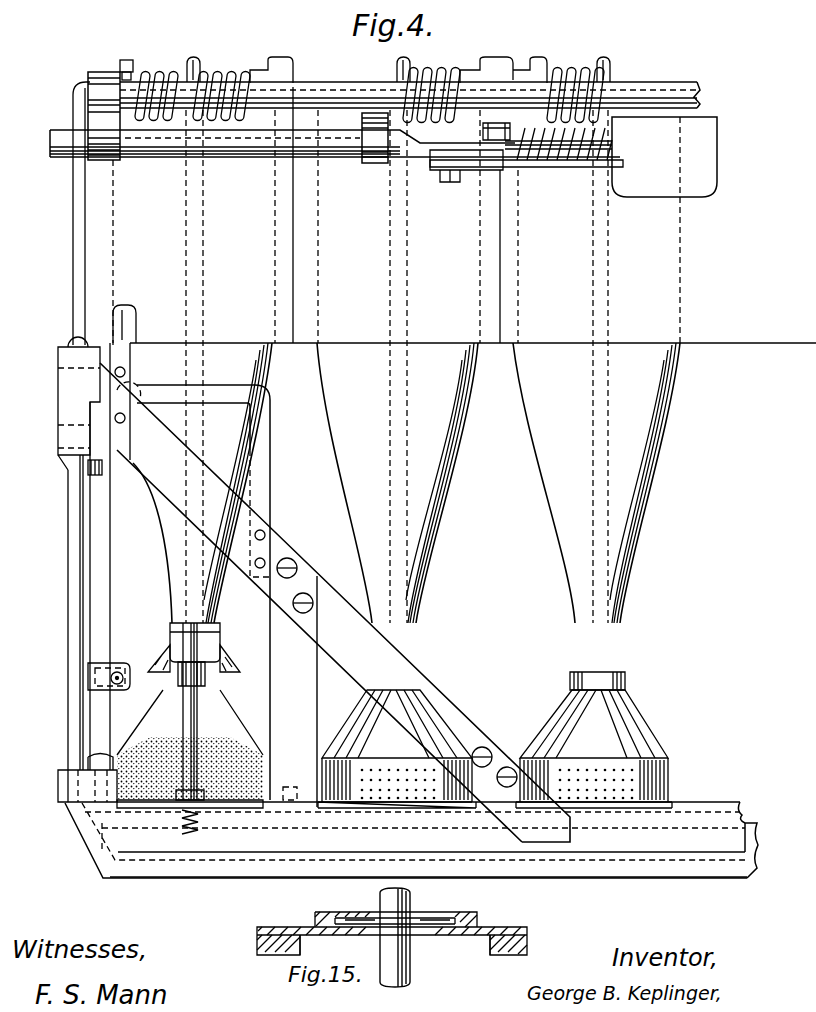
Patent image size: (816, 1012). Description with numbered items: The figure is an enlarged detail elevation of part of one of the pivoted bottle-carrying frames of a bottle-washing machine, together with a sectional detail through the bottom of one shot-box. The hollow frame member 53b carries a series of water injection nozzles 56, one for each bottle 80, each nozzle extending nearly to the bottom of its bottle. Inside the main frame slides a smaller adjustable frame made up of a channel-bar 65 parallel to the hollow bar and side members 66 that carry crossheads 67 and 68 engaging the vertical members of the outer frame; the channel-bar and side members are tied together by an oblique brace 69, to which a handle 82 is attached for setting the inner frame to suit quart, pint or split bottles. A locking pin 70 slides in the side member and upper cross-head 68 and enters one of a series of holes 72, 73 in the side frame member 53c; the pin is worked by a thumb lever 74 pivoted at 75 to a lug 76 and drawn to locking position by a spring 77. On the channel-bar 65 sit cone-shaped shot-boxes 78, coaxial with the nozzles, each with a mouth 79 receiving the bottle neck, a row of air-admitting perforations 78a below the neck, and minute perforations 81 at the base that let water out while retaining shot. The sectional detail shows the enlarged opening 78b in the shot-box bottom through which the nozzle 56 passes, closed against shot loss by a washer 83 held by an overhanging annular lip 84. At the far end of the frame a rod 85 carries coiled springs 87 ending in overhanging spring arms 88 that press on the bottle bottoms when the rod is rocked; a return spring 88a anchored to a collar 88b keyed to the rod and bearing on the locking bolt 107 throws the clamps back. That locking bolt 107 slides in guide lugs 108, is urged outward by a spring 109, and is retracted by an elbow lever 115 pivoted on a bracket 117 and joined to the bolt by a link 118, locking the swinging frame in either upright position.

In FIG. 4, the hollow frame member 53b is at (338, 866).
In FIG. 4, the side frame member 53c is at (74, 614).
In FIG. 4, the water injection nozzle 56 is at (182, 706).
In FIG. 15, the water injection nozzle 56 is at (412, 965).
In FIG. 4, the channel-bar 65 is at (278, 848).
In FIG. 4, the side member 66 is at (80, 566).
In FIG. 4, the crosshead 67 is at (62, 782).
In FIG. 4, the upper cross-head 68 is at (58, 375).
In FIG. 4, the oblique brace 69 is at (240, 518).
In FIG. 4, the locking pin 70 is at (72, 358).
In FIG. 4, the hole 72 is at (76, 285).
In FIG. 4, the hole 73 is at (74, 203).
In FIG. 4, the thumb lever 74 is at (132, 348).
In FIG. 4, the pivot 75 is at (120, 672).
In FIG. 4, the lug 76 is at (100, 690).
In FIG. 4, the spring 77 is at (88, 470).
In FIG. 4, the shot-box 78 is at (222, 712).
In FIG. 15, the shot-box 78 is at (508, 926).
In FIG. 4, the perforations 78a is at (208, 680).
In FIG. 15, the opening 78b is at (395, 945).
In FIG. 4, the mouth 79 is at (222, 658).
In FIG. 4, the bottle 80 is at (166, 542).
In FIG. 4, the perforations 81 is at (266, 776).
In FIG. 4, the handle 82 is at (224, 387).
In FIG. 15, the washer 83 is at (400, 920).
In FIG. 15, the annular lip 84 is at (400, 907).
In FIG. 4, the rod 85 is at (315, 82).
In FIG. 4, the spring 87 is at (226, 74).
In FIG. 4, the spring arm 88 is at (193, 58).
In FIG. 4, the spring 88a is at (152, 74).
In FIG. 4, the collar 88b is at (122, 68).
In FIG. 4, the locking bolt 107 is at (265, 158).
In FIG. 4, the guide lug 108 is at (112, 162).
In FIG. 4, the spring 109 is at (590, 167).
In FIG. 4, the elbow lever 115 is at (548, 163).
In FIG. 4, the bracket 117 is at (472, 172).
In FIG. 4, the link 118 is at (478, 150).